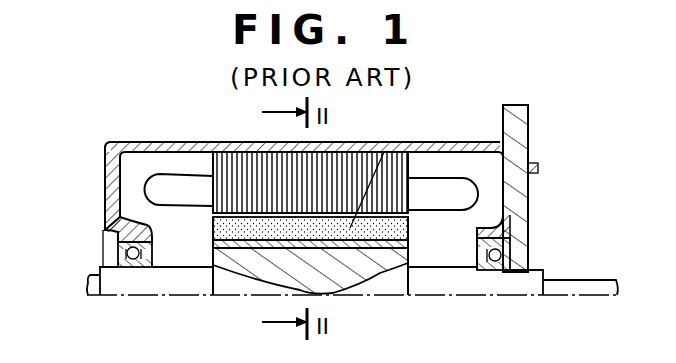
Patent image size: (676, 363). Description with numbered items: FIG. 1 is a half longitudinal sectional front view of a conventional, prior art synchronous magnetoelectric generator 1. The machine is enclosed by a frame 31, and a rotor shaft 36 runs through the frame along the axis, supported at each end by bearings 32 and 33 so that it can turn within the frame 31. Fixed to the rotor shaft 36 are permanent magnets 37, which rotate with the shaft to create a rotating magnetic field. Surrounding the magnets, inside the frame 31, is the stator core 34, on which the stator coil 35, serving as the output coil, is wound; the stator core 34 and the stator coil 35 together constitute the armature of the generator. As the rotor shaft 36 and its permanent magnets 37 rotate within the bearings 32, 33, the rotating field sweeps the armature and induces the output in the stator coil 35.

The motor 1 is at (134, 126).
The frame 31 is at (345, 141).
The bearing 32 is at (524, 222).
The bearing 33 is at (118, 240).
The stator core 34 is at (285, 153).
The stator coil 35 is at (457, 192).
The rotor shaft 36 is at (380, 276).
The permanent magnets 37 is at (384, 150).